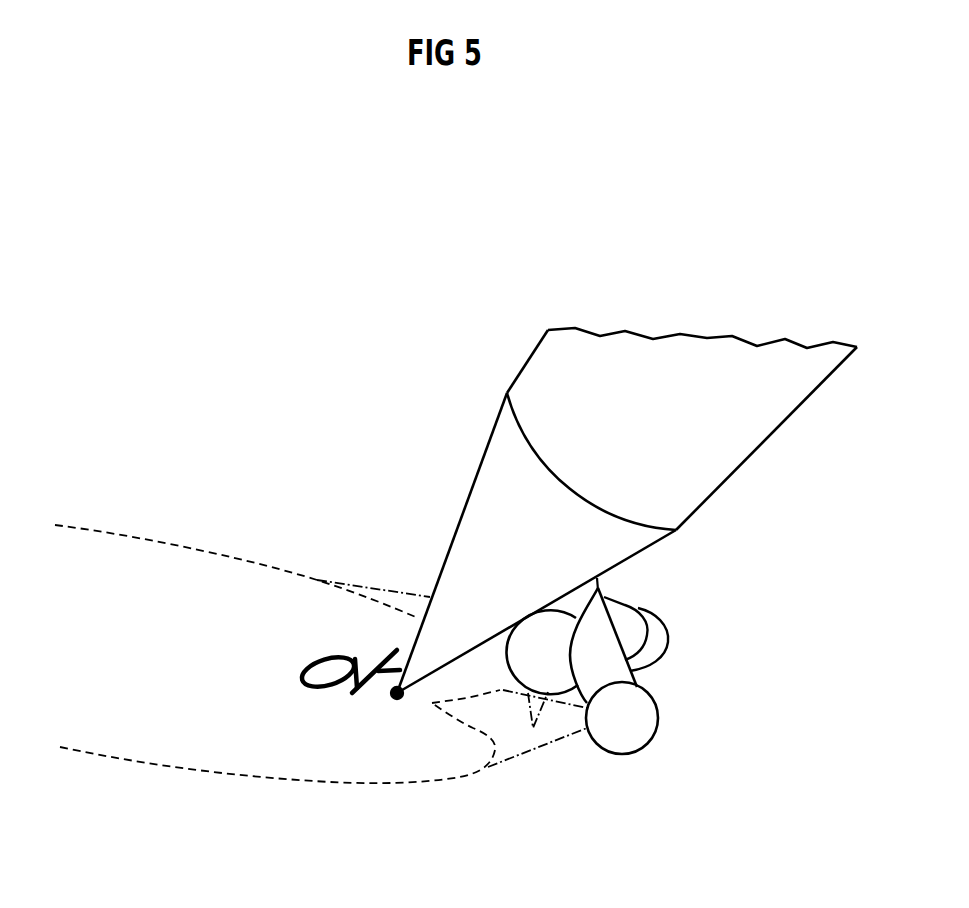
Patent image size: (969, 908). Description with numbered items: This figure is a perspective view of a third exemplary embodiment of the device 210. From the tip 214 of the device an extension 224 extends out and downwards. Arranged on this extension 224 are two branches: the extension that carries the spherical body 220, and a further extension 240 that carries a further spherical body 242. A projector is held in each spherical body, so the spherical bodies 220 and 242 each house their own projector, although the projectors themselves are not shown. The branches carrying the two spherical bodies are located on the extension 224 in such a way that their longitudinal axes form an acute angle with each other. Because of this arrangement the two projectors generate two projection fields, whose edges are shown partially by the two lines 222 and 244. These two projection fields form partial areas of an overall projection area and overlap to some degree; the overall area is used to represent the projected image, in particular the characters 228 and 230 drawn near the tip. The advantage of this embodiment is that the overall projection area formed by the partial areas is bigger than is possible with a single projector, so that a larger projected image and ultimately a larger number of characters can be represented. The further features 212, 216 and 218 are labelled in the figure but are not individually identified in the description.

The stylus / pointing device 210 is at (782, 292).
The side surface of stylus body 212 is at (773, 418).
The tip 214 is at (483, 477).
The stylus tip 216 is at (403, 701).
The finger pad / first contact 218 is at (583, 665).
The spherical body 220 is at (640, 735).
The line 222 is at (247, 778).
The extension 224 is at (601, 586).
The character 228 is at (300, 671).
The character 230 is at (387, 653).
The further extension 240 is at (628, 605).
The further spherical body 242 is at (654, 658).
The line 244 is at (250, 560).